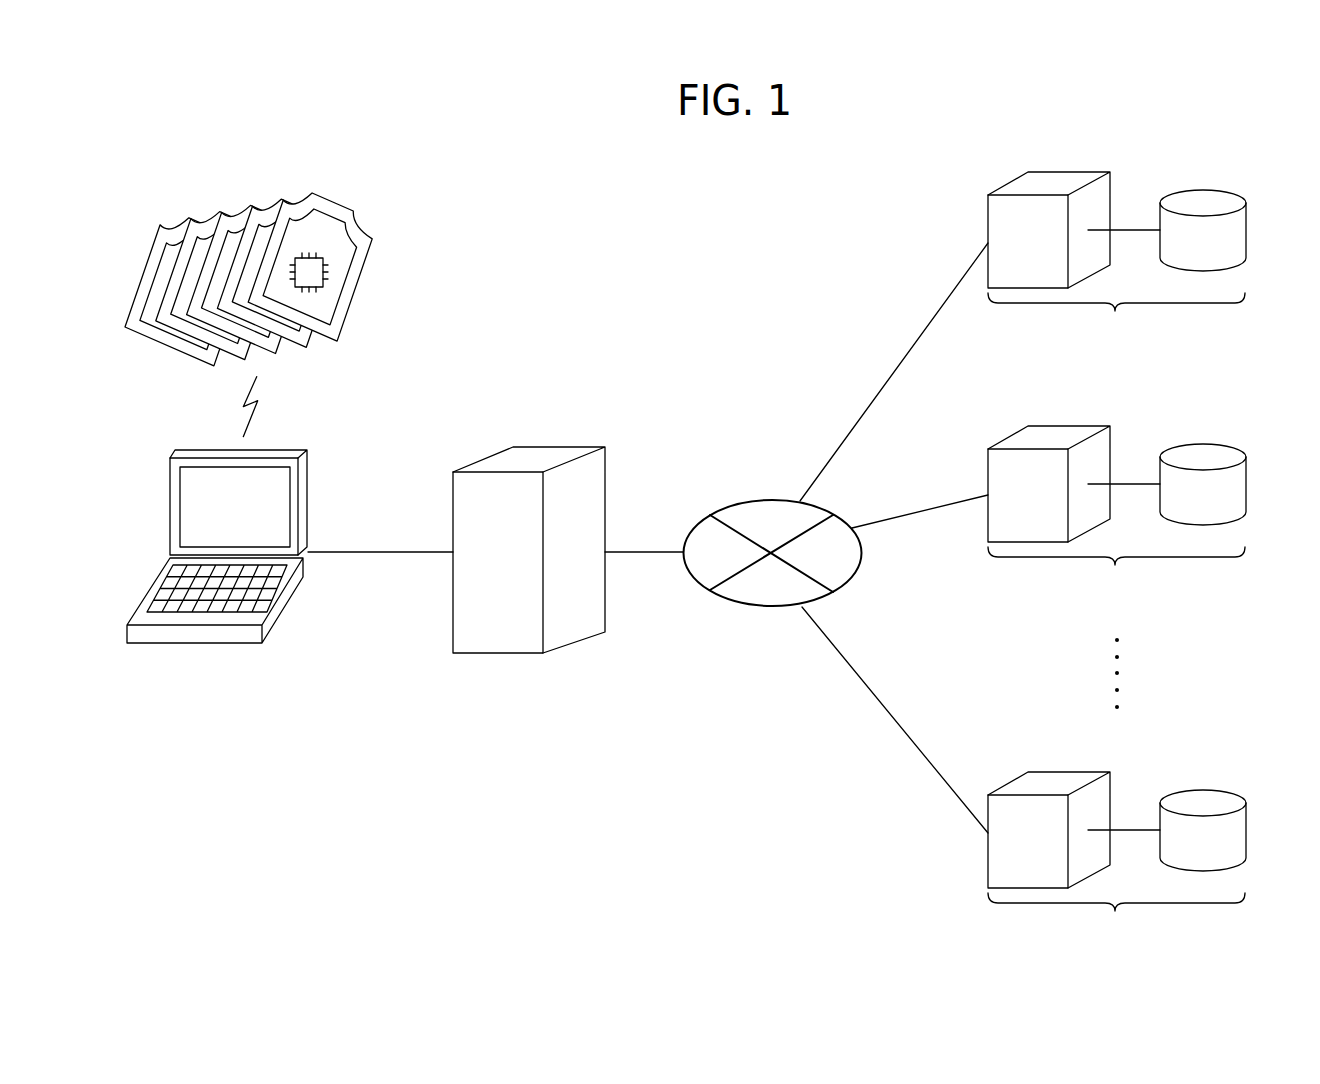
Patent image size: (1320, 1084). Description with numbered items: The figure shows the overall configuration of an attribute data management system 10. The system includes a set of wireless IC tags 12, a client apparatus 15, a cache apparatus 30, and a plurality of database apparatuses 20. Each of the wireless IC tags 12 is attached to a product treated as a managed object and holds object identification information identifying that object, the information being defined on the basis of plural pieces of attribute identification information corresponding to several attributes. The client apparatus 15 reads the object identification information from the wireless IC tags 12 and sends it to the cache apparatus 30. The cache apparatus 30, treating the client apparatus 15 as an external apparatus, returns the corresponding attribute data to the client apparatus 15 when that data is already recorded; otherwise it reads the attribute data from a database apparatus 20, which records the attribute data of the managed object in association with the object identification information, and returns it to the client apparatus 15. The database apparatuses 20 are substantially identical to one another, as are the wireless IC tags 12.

The attribute data management system 10 is at (1307, 131).
The wireless IC tags 12 is at (382, 196).
The client apparatus 15 is at (308, 486).
The cache apparatus 30 is at (605, 485).
The database apparatuses 20 is at (1124, 543).